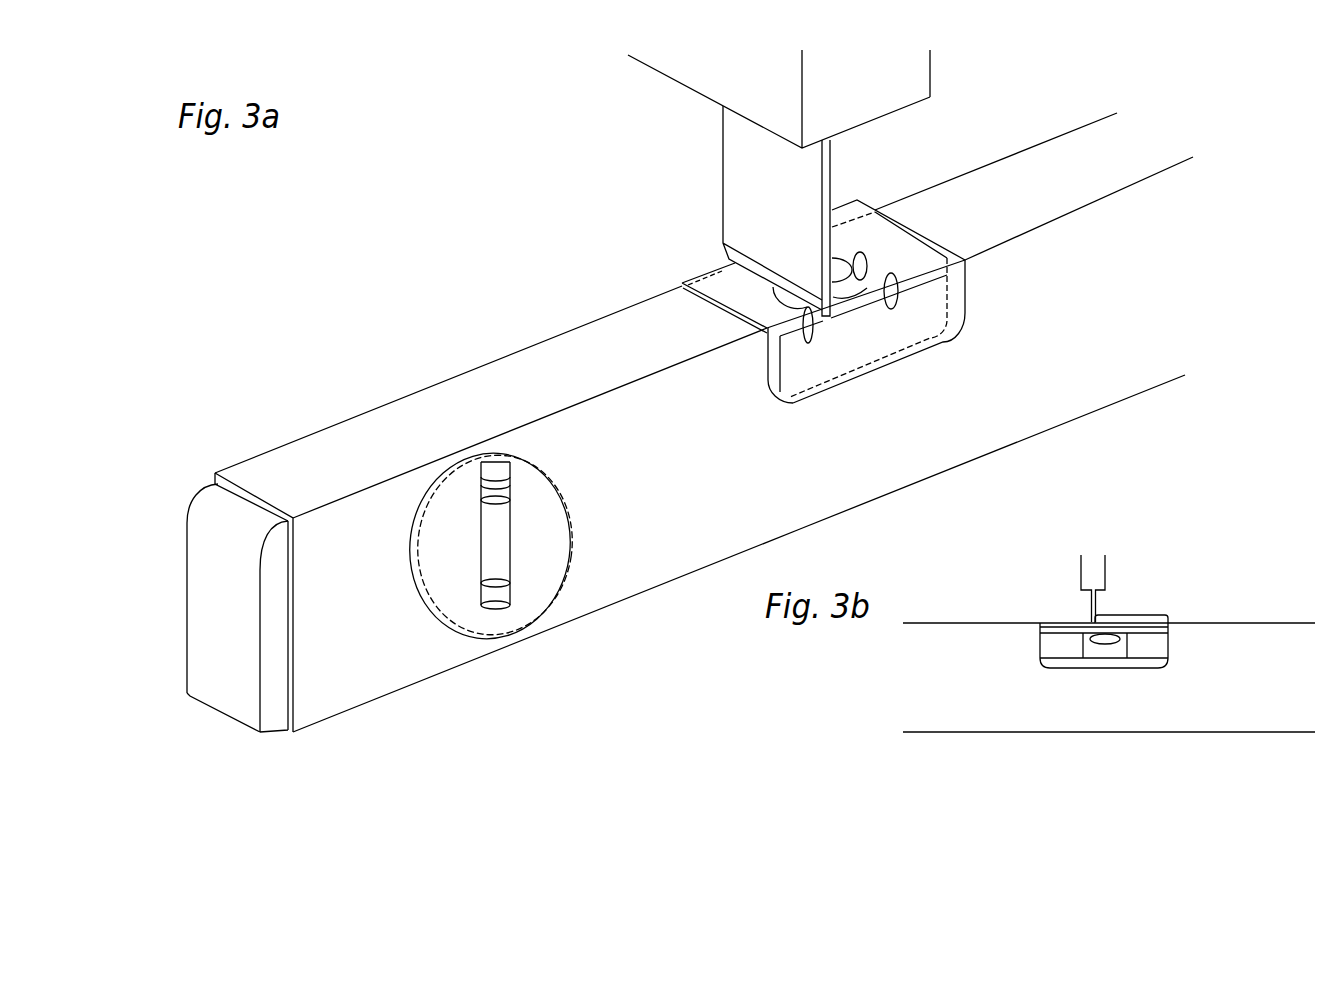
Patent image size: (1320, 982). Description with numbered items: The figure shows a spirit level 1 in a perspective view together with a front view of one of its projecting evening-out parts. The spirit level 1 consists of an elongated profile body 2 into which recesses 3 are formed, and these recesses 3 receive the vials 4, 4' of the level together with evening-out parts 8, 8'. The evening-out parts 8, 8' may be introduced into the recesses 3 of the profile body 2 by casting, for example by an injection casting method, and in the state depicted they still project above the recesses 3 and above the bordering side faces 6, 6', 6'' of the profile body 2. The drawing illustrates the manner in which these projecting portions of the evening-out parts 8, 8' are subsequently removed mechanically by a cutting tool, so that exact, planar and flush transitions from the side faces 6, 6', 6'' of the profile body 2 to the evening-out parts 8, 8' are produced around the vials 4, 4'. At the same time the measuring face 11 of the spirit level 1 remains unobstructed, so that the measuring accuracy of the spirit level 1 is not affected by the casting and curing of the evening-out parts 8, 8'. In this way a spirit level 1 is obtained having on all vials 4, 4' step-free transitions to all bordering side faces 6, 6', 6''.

In FIG. 3a, the spirit level 1 is at (405, 336).
In FIG. 3a, the profile body 2 is at (553, 362).
In FIG. 3a, the recess 3 is at (768, 360).
In FIG. 3b, the recess 3 is at (1040, 664).
In FIG. 3a, the vial 4 is at (869, 238).
In FIG. 3b, the vial 4 is at (1127, 620).
In FIG. 3a, the vial 4' is at (554, 535).
In FIG. 3a, the side face 6 is at (1079, 204).
In FIG. 3b, the side face 6 is at (1109, 590).
In FIG. 3a, the side face 6' is at (992, 413).
In FIG. 3b, the side face 6' is at (1244, 680).
In FIG. 3a, the side face 6'' is at (996, 115).
In FIG. 3a, the evening-out part 8 is at (879, 331).
In FIG. 3b, the evening-out part 8 is at (1131, 588).
In FIG. 3a, the evening-out part 8' is at (468, 546).
In FIG. 3a, the measuring face 11 is at (455, 668).
In FIG. 3b, the measuring face 11 is at (1204, 735).